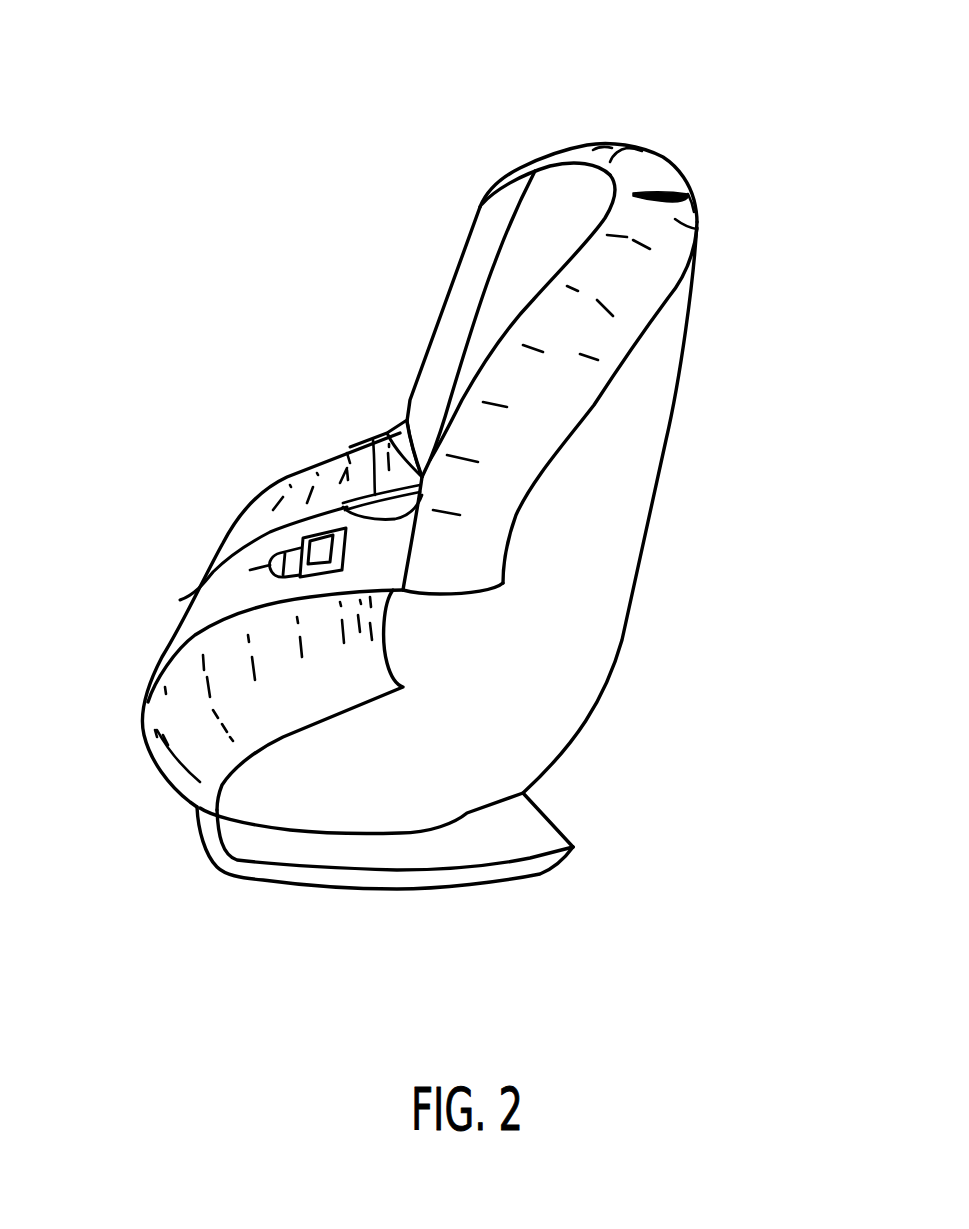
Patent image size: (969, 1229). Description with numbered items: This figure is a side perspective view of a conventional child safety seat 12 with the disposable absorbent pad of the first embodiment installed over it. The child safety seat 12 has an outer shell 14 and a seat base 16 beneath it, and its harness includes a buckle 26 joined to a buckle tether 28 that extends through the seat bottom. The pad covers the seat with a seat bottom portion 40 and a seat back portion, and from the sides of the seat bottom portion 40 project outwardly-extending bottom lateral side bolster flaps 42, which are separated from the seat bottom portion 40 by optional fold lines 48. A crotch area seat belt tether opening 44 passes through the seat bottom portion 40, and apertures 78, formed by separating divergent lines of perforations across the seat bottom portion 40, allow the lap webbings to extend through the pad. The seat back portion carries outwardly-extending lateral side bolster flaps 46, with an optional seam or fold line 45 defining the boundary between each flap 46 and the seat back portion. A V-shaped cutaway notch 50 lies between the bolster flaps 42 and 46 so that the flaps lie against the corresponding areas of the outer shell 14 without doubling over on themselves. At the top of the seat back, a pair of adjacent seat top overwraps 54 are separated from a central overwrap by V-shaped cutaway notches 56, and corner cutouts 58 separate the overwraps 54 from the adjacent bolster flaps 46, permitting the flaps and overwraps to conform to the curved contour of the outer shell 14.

The child safety seat 12 is at (692, 557).
The outer shell 14 is at (592, 675).
The seat base 16 is at (237, 870).
The buckle 26 is at (333, 527).
The buckle tether 28 is at (268, 571).
The seat bottom portion 40 is at (223, 600).
The bottom lateral side bolster flaps 42 is at (308, 475).
The crotch area seat belt tether opening 44 is at (282, 578).
The seam or fold line 45 is at (506, 251).
The lateral side bolster flaps 46 is at (460, 287).
The fold lines 48 is at (270, 537).
The "V" shaped cutaway notch 50 is at (422, 615).
The adjacent seat top overwraps 54 is at (655, 168).
The "V" shaped cutaway notches 56 is at (598, 150).
The corner cutouts 58 is at (697, 229).
The apertures 78 is at (373, 497).